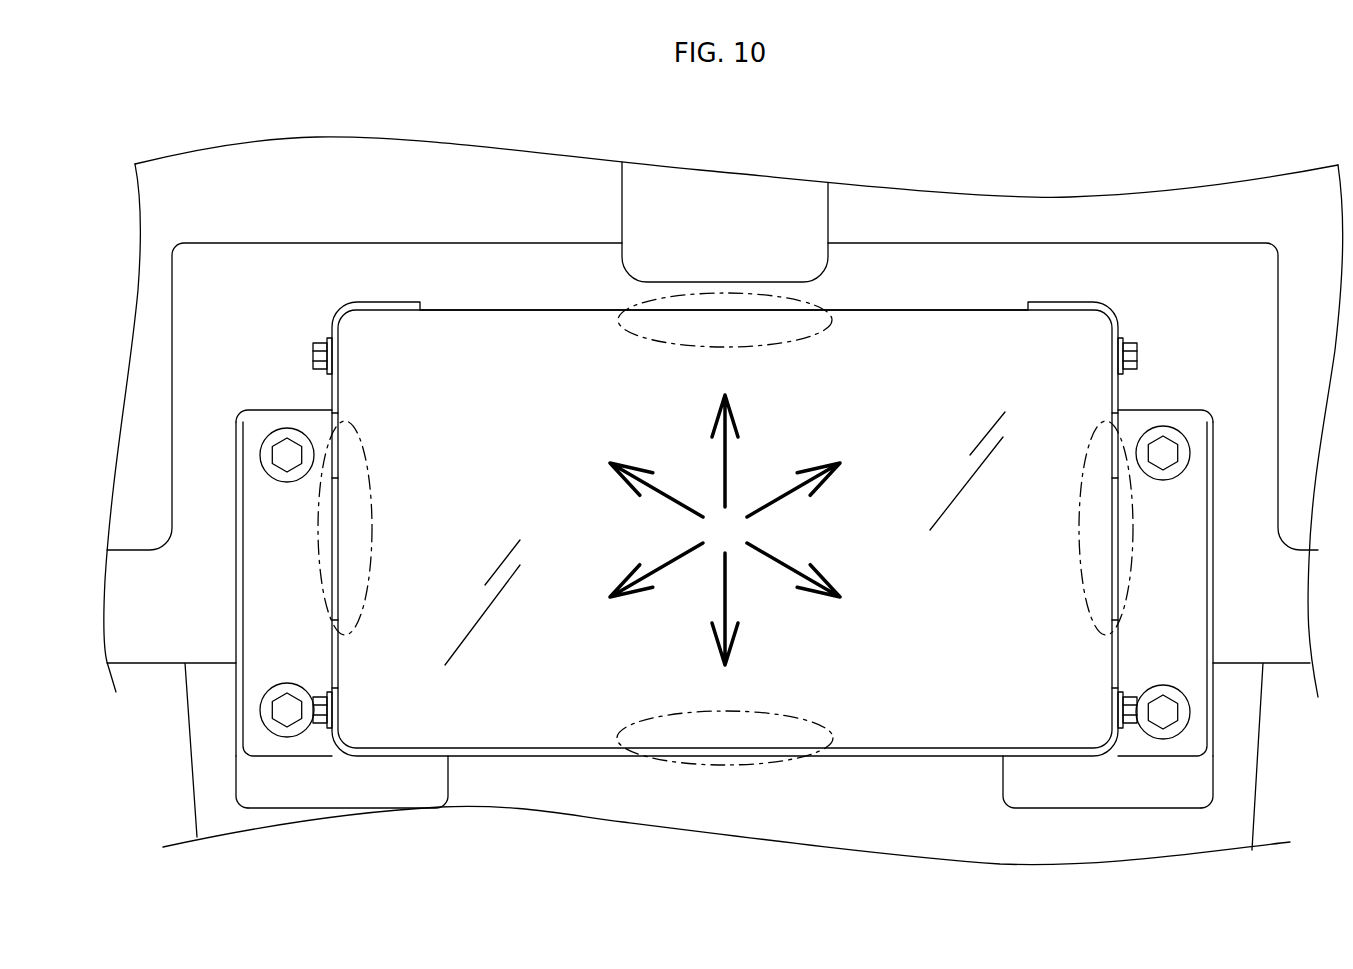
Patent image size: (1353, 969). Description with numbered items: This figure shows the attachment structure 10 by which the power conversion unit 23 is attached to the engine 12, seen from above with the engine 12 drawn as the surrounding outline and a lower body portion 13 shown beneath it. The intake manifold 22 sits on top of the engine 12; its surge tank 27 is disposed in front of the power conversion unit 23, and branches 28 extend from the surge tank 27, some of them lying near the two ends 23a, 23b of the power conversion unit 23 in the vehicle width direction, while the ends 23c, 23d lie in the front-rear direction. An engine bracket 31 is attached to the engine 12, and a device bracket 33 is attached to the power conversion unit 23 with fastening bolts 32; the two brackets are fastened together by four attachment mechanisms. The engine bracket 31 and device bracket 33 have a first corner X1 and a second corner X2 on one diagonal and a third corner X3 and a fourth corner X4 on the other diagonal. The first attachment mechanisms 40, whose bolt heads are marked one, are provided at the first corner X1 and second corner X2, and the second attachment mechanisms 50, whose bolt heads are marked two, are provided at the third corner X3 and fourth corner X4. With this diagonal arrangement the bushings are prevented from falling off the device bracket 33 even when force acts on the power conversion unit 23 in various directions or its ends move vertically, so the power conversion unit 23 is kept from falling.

The attachment structure 10 is at (724, 590).
The engine 12 is at (192, 155).
The lower body member 13 is at (623, 818).
The intake manifold 22 is at (380, 143).
The power conversion unit 23 is at (490, 303).
The end of power conversion unit 23a is at (392, 528).
The end of power conversion unit 23b is at (1064, 528).
The end of power conversion unit 23c is at (725, 706).
The end of power conversion unit 23d is at (725, 348).
The surge tank 27 is at (733, 196).
The branches 28 is at (947, 212).
The engine bracket 31 is at (727, 833).
The fastening bolts 32 is at (318, 340).
The device bracket 33 is at (722, 546).
The first attachment mechanisms 40 is at (250, 712).
The second attachment mechanisms 50 is at (250, 448).
The first corner X1 is at (240, 750).
The second corner X2 is at (1203, 410).
The third corner X3 is at (250, 408).
The fourth corner X4 is at (1200, 750).